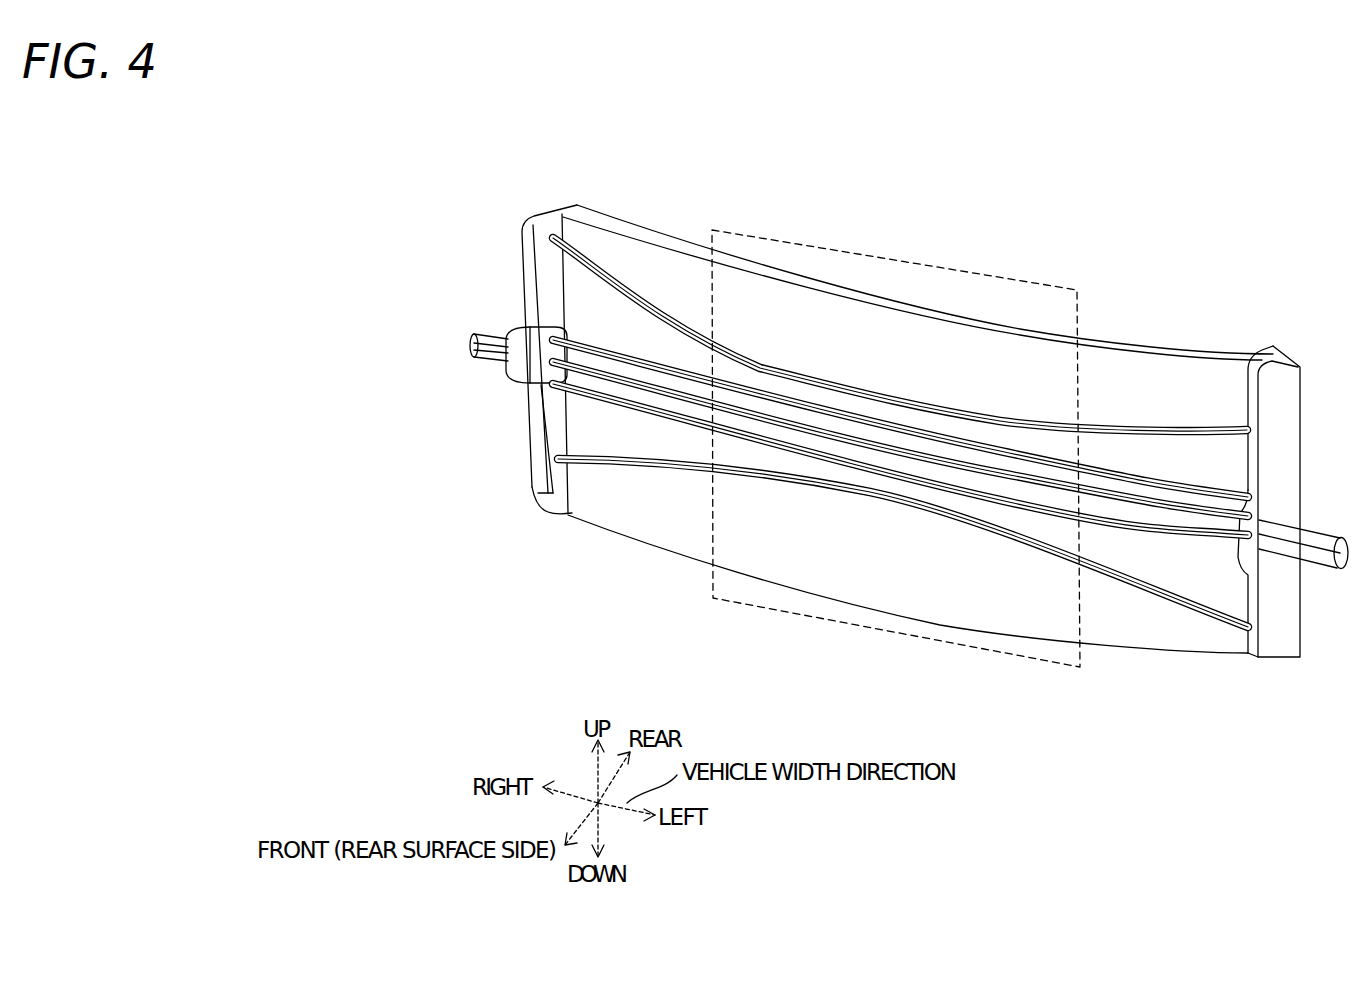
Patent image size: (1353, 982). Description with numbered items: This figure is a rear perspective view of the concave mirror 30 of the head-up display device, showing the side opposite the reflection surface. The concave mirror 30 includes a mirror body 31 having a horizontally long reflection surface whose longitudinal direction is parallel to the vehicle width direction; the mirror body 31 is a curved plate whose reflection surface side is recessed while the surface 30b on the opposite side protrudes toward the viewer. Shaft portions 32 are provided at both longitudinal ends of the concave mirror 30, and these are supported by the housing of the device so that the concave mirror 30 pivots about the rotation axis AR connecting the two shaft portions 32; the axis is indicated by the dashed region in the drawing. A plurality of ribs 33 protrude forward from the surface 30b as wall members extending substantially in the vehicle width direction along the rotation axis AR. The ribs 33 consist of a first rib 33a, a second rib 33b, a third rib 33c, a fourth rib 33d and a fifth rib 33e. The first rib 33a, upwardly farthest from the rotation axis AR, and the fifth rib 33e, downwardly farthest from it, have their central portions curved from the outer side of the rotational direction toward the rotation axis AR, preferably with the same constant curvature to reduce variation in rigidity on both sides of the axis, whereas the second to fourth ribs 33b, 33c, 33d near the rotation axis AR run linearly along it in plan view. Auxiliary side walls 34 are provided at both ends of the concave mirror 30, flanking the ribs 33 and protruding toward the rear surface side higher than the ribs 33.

The concave mirror 30 is at (902, 435).
The surface on opposite side to reflection surface 30b is at (908, 597).
The mirror body 31 is at (792, 272).
The shaft portion 32 is at (500, 337).
The ribs 33 is at (851, 450).
The first rib 33a is at (653, 310).
The second rib 33b is at (587, 343).
The third rib 33c is at (572, 392).
The fourth rib 33d is at (642, 408).
The fifth rib 33e is at (1147, 592).
The auxiliary side wall 34 is at (550, 290).
The rotation axis AR is at (905, 300).